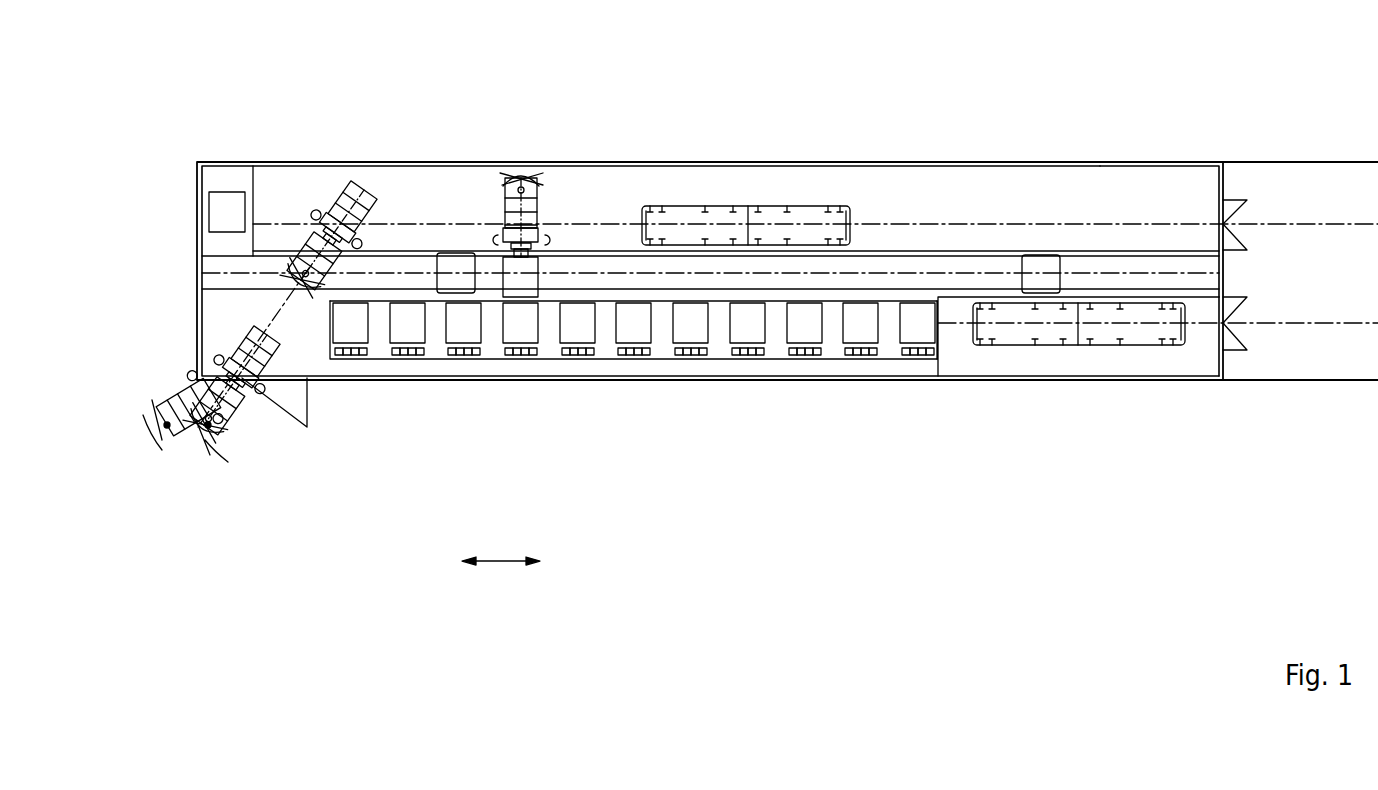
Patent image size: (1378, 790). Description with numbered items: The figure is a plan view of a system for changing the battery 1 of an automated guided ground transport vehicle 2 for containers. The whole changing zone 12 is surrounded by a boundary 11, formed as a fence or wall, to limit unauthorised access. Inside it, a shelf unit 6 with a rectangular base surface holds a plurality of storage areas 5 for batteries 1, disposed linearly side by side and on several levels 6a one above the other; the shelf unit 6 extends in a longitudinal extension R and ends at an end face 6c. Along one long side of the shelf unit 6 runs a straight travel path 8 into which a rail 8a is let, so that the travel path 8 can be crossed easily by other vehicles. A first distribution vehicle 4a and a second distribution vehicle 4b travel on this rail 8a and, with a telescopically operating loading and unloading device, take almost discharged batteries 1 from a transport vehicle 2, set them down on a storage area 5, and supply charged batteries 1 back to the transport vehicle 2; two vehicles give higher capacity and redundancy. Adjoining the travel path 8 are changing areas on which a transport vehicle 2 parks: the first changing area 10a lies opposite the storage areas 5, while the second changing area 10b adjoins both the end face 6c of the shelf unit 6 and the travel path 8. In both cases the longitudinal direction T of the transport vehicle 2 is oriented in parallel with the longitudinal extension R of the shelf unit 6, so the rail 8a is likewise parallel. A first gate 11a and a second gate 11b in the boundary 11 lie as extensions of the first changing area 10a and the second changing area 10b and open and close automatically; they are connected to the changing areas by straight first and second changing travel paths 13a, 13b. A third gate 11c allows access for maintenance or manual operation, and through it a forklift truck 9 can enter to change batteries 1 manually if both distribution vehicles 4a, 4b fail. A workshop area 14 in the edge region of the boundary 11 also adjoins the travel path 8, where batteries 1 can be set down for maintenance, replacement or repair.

The battery 1 is at (228, 212).
The automated guided ground transport vehicle 2 is at (913, 277).
The first distribution vehicle 4a is at (458, 265).
The second distribution vehicle 4b is at (1038, 265).
The storage area 5 is at (427, 330).
The shelf unit 6 is at (663, 352).
The level 6a is at (605, 302).
The end face 6c is at (939, 336).
The travel path 8 is at (1145, 265).
The rail 8a is at (1107, 272).
The forklift truck 9 is at (505, 196).
The first changing area 10a is at (727, 186).
The second changing area 10b is at (1019, 345).
The boundary 11 is at (727, 378).
The first gate 11a is at (1224, 223).
The second gate 11b is at (1230, 340).
The third gate 11c is at (290, 398).
The changing zone 12 is at (303, 205).
The first changing travel path 13a is at (1193, 193).
The second changing travel path 13b is at (1193, 357).
The workshop area 14 is at (245, 170).
The longitudinal direction of the transport vehicle T is at (807, 222).
The longitudinal extension of the shelf unit R is at (501, 546).